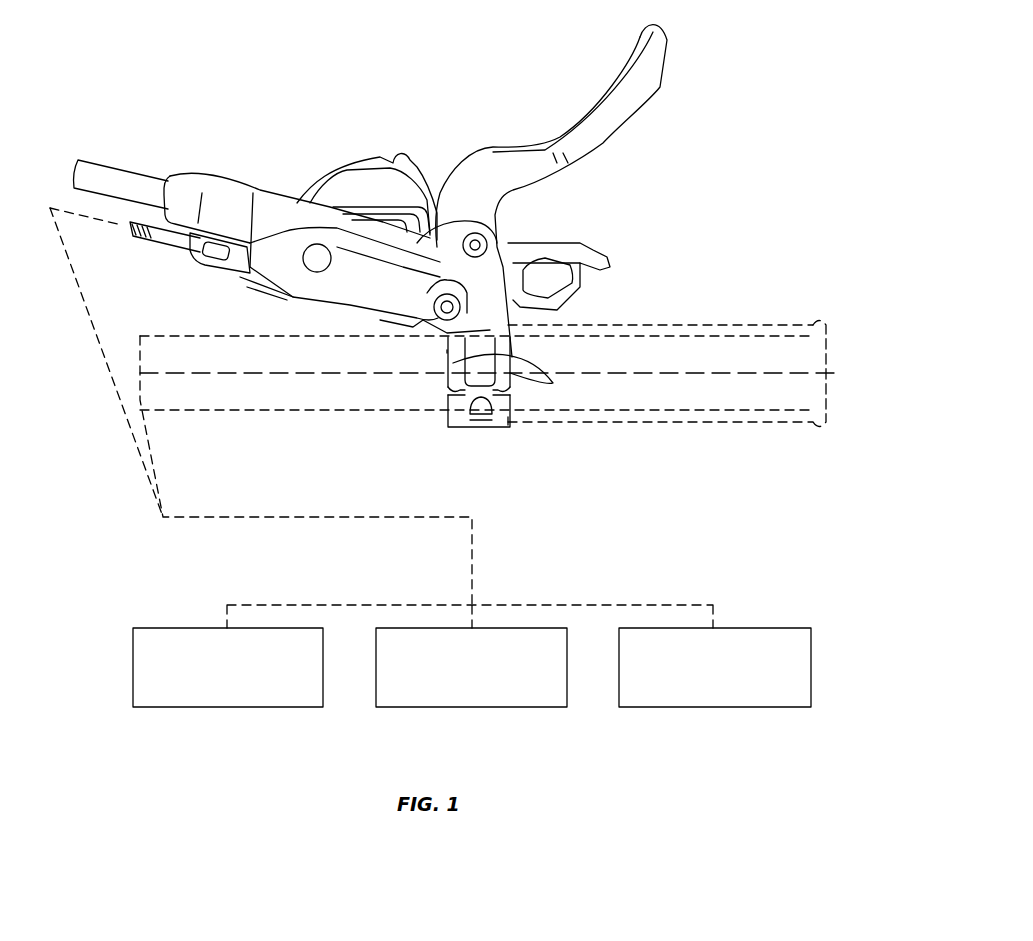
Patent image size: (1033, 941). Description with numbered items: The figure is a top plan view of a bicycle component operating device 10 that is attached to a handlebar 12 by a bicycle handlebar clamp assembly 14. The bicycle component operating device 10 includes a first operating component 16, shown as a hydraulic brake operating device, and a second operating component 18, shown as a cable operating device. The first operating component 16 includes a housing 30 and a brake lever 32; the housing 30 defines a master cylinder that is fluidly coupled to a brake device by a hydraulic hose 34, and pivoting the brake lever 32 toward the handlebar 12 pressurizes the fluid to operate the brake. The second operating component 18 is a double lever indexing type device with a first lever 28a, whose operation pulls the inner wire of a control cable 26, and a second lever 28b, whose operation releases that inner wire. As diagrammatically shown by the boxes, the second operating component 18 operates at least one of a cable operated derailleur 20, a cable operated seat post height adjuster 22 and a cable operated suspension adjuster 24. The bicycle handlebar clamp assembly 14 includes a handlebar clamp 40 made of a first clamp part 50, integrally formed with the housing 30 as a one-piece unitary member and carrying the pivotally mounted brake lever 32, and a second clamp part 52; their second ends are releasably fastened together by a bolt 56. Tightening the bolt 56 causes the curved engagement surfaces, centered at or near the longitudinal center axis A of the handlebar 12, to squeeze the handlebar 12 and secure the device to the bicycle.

The bicycle component operating device 10 is at (432, 108).
The handlebar 12 is at (415, 413).
The bicycle handlebar clamp assembly 14 is at (438, 383).
The first operating component 16 is at (288, 188).
The second operating component 18 is at (380, 148).
The derailleur 20 is at (228, 707).
The seat post height adjuster 22 is at (472, 707).
The suspension adjuster 24 is at (713, 707).
The control cable 26 is at (153, 248).
The first lever 28a is at (447, 353).
The second lever 28b is at (593, 250).
The housing 30 is at (500, 243).
The brake lever 32 is at (625, 117).
The hydraulic hose 34 is at (118, 163).
The handlebar clamp 40 is at (573, 463).
The first clamp part 50 is at (553, 383).
The second clamp part 52 is at (508, 417).
The bolt 56 is at (480, 427).
The longitudinal center axis A is at (643, 372).